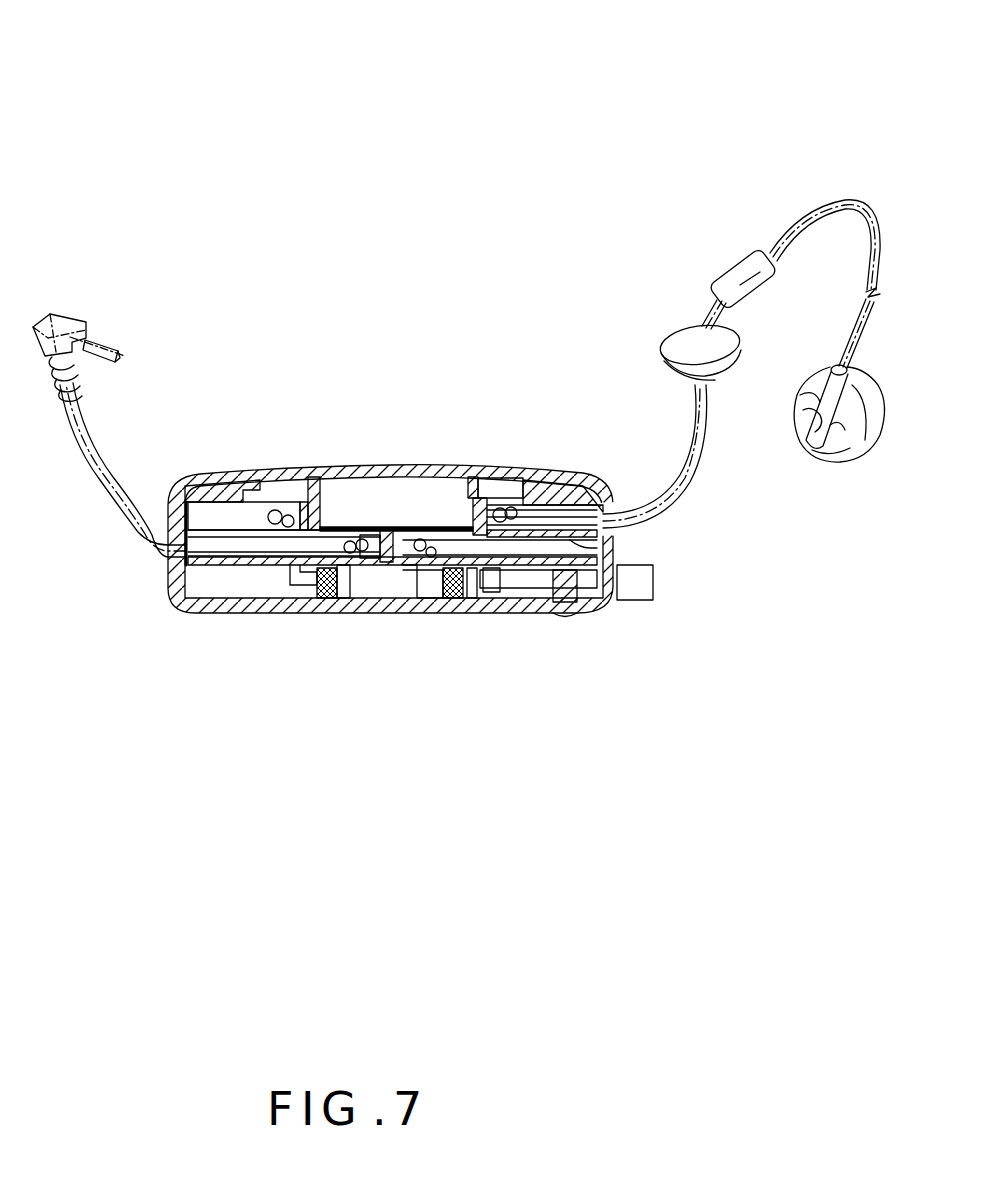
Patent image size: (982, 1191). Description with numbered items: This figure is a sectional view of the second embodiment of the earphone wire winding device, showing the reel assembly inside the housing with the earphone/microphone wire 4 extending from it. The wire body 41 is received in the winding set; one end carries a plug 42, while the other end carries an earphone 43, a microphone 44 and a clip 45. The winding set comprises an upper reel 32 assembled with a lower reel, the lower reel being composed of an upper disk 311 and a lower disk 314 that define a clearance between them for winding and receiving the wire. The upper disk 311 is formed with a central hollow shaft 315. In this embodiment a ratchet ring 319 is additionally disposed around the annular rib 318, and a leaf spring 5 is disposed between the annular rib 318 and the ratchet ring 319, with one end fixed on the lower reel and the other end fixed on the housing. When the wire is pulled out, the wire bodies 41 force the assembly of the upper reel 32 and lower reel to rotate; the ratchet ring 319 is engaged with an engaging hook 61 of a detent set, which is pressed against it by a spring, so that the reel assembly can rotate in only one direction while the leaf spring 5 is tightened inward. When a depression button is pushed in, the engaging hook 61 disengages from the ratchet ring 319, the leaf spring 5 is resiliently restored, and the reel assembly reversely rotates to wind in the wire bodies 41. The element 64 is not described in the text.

The earphone/microphone wire 4 is at (818, 160).
The wire body 41 is at (98, 462).
The plug 42 is at (73, 312).
The earphone 43 is at (862, 447).
The microphone 44 is at (742, 267).
The clip 45 is at (682, 350).
The upper reel 32 is at (370, 468).
The upper disk 311 is at (622, 550).
The lower disk 314 is at (228, 560).
The central hollow shaft 315 is at (392, 565).
The annular rib 318 is at (332, 592).
The ratchet ring 319 is at (495, 580).
The leaf spring 5 is at (435, 578).
The engaging hook 61 is at (500, 580).
The push button 64 is at (640, 587).